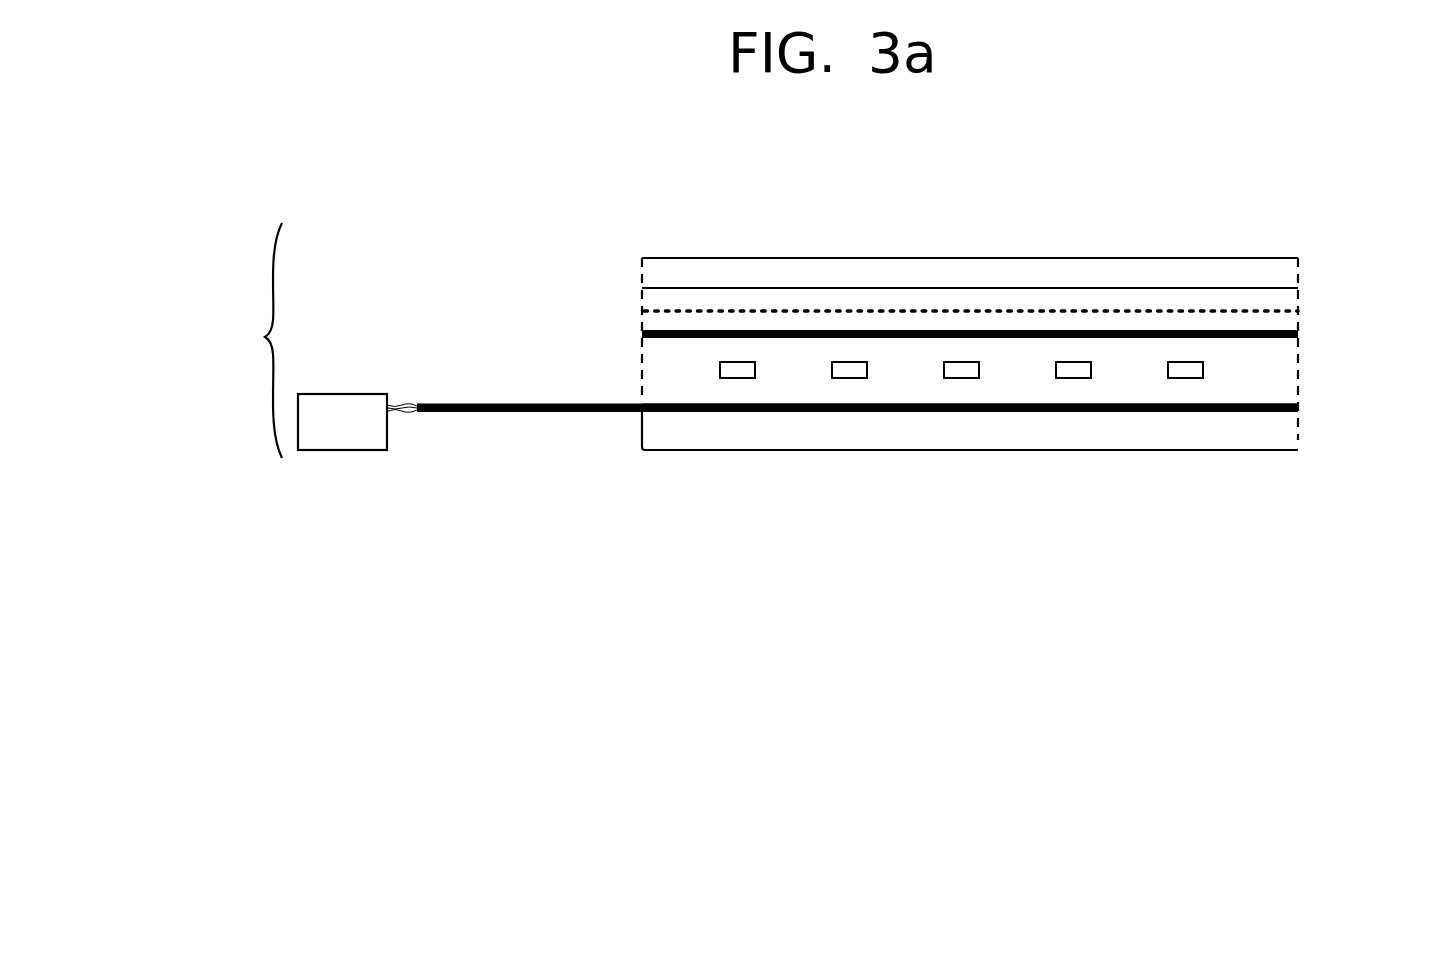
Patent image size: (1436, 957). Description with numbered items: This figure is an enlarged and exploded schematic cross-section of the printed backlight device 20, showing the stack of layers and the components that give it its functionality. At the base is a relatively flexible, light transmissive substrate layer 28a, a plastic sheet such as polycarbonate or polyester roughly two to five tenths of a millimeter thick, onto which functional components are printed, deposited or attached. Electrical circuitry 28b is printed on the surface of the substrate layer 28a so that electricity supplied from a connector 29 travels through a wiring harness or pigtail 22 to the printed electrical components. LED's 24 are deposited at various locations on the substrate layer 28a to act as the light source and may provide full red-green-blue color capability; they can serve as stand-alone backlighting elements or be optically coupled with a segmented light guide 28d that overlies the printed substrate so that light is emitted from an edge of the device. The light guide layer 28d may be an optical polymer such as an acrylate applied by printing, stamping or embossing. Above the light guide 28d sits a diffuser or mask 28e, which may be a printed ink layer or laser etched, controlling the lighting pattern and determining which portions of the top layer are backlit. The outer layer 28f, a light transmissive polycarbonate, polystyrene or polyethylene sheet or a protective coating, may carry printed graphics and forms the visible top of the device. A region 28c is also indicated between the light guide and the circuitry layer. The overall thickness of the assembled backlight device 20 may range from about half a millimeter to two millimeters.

The backlight device 20 is at (257, 336).
The wiring harness or pigtail 22 is at (438, 413).
The LED's 24 is at (733, 368).
The connector 29 is at (315, 440).
The substrate layer 28a is at (1277, 423).
The electrical circuitry 28b is at (1298, 407).
The cavity layer 28c is at (1288, 372).
The segmented light guide 28d is at (1297, 328).
The diffuser or mask 28e is at (1293, 298).
The outer layer 28f is at (1298, 260).